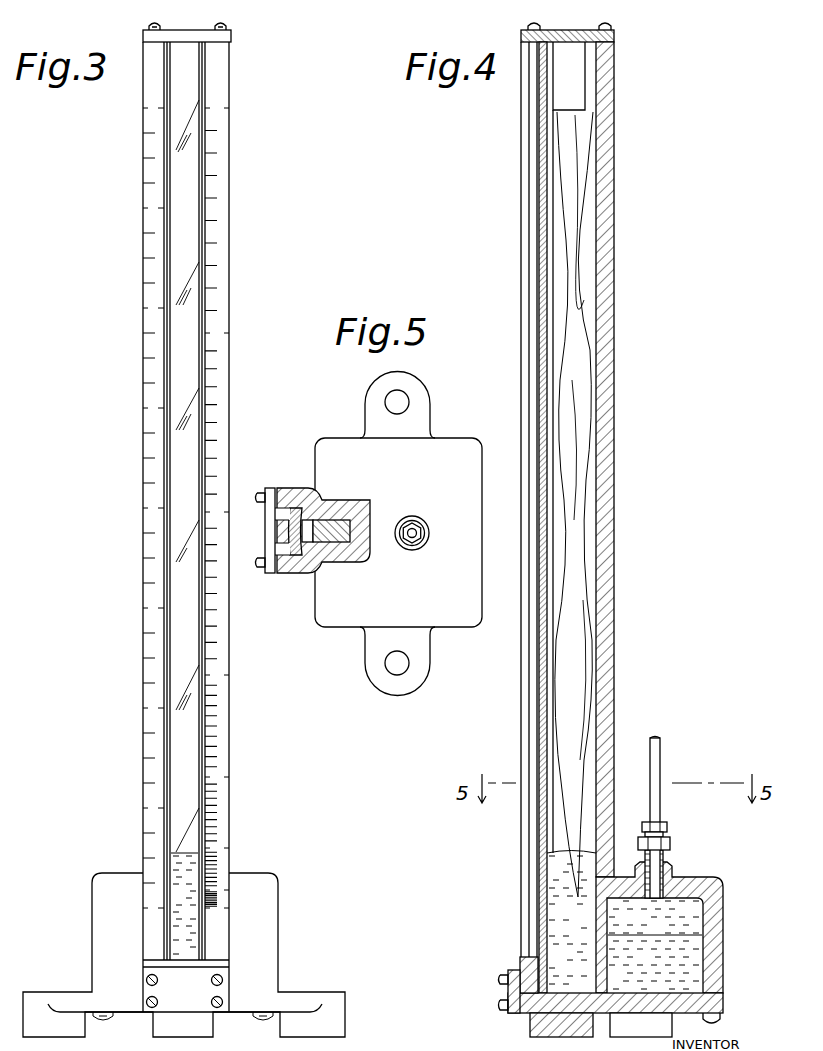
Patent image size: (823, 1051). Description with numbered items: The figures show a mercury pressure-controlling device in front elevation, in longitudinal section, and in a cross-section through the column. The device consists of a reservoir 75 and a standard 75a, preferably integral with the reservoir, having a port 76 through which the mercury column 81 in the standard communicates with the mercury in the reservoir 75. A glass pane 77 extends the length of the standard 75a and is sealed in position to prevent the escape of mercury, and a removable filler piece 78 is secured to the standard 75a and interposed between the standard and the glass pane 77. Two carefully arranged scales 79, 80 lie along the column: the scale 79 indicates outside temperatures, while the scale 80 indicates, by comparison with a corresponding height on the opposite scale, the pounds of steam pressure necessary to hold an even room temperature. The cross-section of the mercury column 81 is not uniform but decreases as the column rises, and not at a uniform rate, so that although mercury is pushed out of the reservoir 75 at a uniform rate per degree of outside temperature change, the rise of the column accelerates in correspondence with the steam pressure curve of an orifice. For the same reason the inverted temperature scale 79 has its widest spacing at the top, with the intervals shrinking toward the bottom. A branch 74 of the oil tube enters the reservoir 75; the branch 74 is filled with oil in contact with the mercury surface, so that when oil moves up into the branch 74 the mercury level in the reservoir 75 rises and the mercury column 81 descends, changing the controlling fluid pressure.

In FIG. 4, the branch 74 is at (656, 779).
In FIG. 5, the branch 74 is at (421, 526).
In FIG. 3, the reservoir 75 is at (260, 912).
In FIG. 4, the reservoir 75 is at (674, 898).
In FIG. 5, the reservoir 75 is at (447, 452).
In FIG. 3, the standard 75a is at (232, 692).
In FIG. 4, the standard 75a is at (606, 621).
In FIG. 5, the standard 75a is at (363, 502).
In FIG. 4, the port 76 is at (641, 1024).
In FIG. 3, the glass pane 77 is at (172, 672).
In FIG. 4, the glass pane 77 is at (539, 833).
In FIG. 5, the glass pane 77 is at (297, 532).
In FIG. 4, the removable filler piece 78 is at (575, 693).
In FIG. 5, the removable filler piece 78 is at (342, 545).
In FIG. 3, the temperature scale 79 is at (212, 738).
In FIG. 3, the pressure scale 80 is at (146, 769).
In FIG. 3, the mercury column 81 is at (176, 856).
In FIG. 4, the mercury column 81 is at (550, 862).